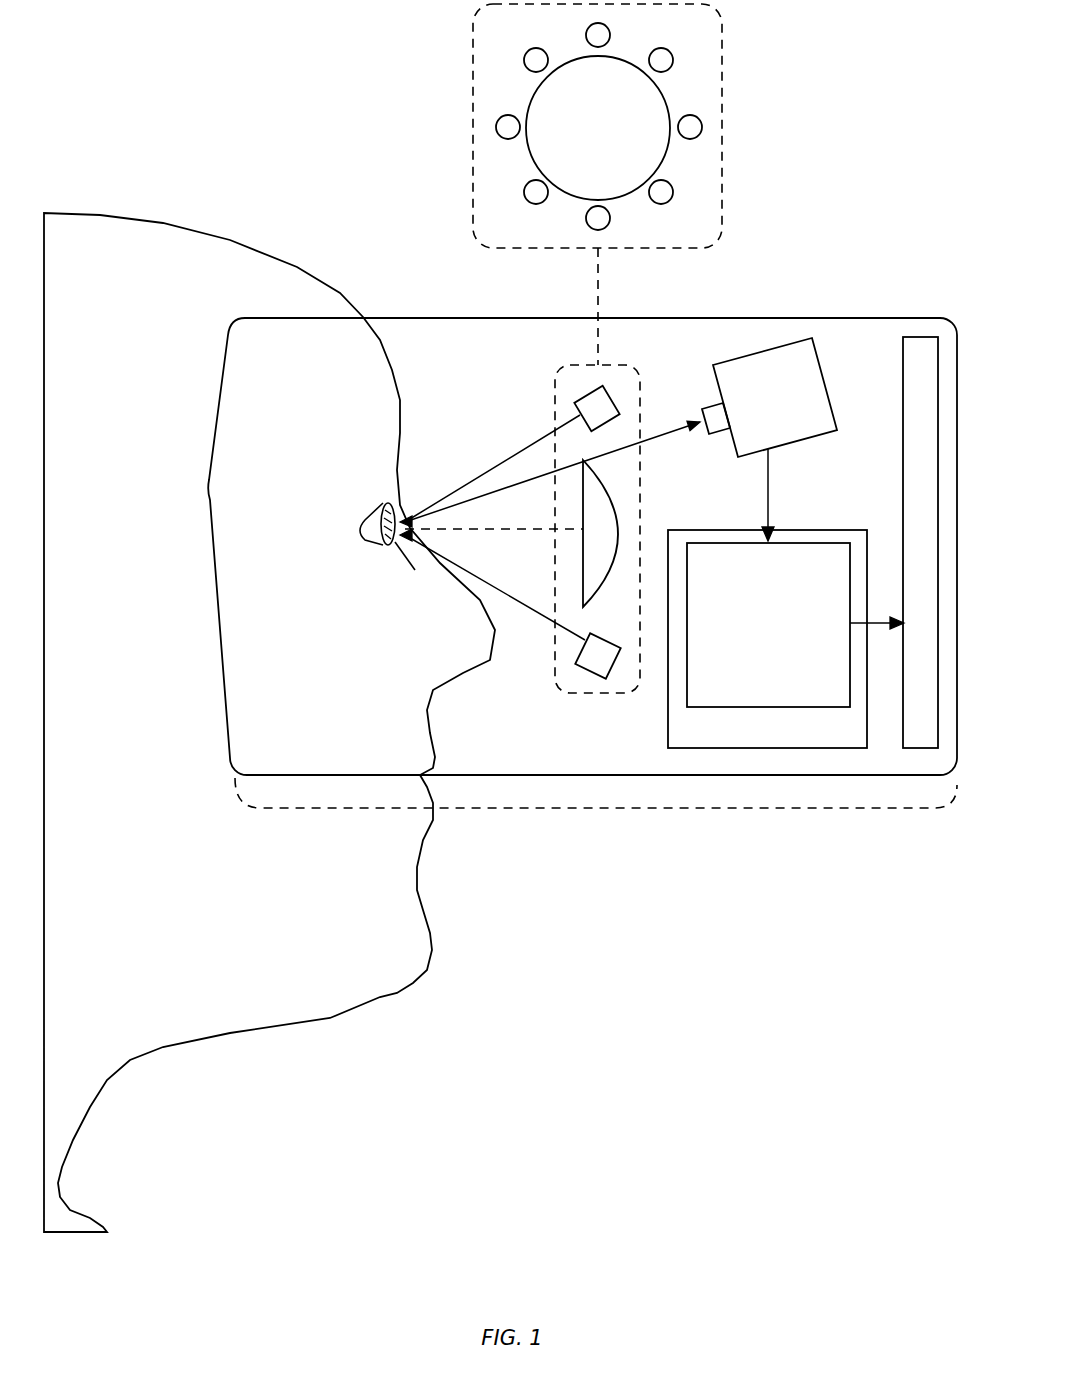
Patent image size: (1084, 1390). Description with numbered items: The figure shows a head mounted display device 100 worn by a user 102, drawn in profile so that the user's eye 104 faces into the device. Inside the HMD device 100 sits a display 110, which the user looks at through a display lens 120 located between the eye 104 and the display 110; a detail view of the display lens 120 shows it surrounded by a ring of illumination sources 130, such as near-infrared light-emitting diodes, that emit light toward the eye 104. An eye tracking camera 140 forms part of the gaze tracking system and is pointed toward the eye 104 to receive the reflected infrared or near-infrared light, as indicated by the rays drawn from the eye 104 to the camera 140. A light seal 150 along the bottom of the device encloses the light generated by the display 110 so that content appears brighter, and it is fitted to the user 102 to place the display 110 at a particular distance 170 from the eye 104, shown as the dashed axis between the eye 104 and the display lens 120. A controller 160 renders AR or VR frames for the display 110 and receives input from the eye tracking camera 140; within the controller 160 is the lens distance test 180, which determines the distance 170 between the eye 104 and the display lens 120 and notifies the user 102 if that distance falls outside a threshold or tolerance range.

The head mounted display device 100 is at (534, 567).
The user 102 is at (80, 301).
The eye 104 is at (363, 513).
The display 110 is at (920, 337).
The display lens 120 is at (580, 166).
The illumination source 130 is at (496, 126).
The eye tracking camera 140 is at (755, 427).
The light seal 150 is at (595, 812).
The controller 160 is at (842, 739).
The distance 170 is at (494, 545).
The lens distance test 180 is at (810, 663).